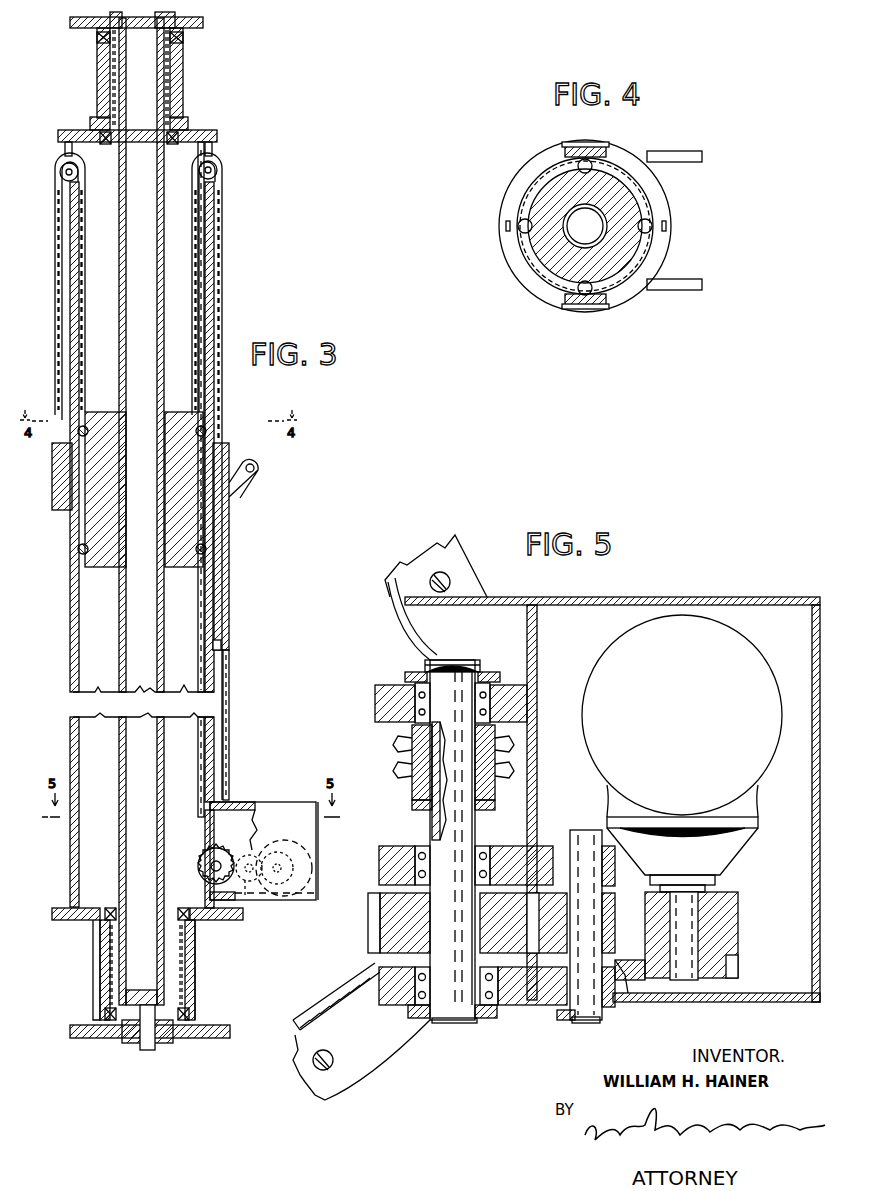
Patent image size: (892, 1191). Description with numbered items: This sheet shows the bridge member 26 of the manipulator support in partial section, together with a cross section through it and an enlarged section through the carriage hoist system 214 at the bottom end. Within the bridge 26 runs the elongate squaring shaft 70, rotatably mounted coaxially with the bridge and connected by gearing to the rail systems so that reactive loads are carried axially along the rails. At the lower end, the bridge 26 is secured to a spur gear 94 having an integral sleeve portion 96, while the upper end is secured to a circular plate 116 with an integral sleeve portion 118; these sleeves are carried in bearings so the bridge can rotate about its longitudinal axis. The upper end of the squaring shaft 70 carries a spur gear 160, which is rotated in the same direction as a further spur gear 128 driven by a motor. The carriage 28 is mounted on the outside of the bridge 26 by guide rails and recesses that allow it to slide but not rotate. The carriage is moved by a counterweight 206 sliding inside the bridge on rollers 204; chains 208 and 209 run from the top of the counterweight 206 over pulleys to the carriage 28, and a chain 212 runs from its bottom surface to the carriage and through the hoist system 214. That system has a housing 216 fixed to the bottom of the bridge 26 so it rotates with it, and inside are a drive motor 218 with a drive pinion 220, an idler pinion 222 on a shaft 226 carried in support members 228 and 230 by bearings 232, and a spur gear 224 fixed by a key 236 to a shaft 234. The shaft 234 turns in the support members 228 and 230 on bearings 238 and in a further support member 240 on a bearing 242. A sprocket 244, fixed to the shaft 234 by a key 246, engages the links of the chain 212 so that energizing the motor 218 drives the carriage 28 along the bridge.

In FIG. 4, the bridge member 26 is at (523, 186).
In FIG. 3, the carriage 28 is at (222, 635).
In FIG. 4, the carriage 28 is at (498, 204).
In FIG. 3, the elongate squaring shaft 70 is at (166, 662).
In FIG. 4, the elongate squaring shaft 70 is at (605, 222).
In FIG. 3, the spur gear 94 is at (68, 920).
In FIG. 3, the sleeve portion 96 is at (70, 968).
In FIG. 3, the circular plate 116 is at (190, 135).
In FIG. 3, the sleeve portion 118 is at (183, 76).
In FIG. 3, the spur gear 128 is at (217, 1038).
In FIG. 3, the spur gear 160 is at (203, 17).
In FIG. 3, the rollers 204 is at (85, 558).
In FIG. 4, the rollers 204 is at (555, 280).
In FIG. 3, the counterweight 206 is at (105, 567).
In FIG. 4, the counterweight 206 is at (548, 258).
In FIG. 3, the chain 208 is at (56, 418).
In FIG. 4, the chain 208 is at (505, 228).
In FIG. 3, the chain 209 is at (222, 404).
In FIG. 4, the chain 209 is at (668, 230).
In FIG. 3, the chain 212 is at (232, 574).
In FIG. 3, the carriage hoist system 214 is at (259, 790).
In FIG. 3, the housing 216 is at (265, 802).
In FIG. 5, the housing 216 is at (740, 597).
In FIG. 3, the drive motor 218 is at (305, 858).
In FIG. 5, the drive motor 218 is at (682, 715).
In FIG. 3, the drive pinion 220 is at (300, 880).
In FIG. 5, the drive pinion 220 is at (720, 918).
In FIG. 3, the idler pinion 222 is at (258, 895).
In FIG. 5, the idler pinion 222 is at (630, 978).
In FIG. 3, the spur gear 224 is at (212, 915).
In FIG. 5, the spur gear 224 is at (515, 1010).
In FIG. 5, the shaft 226 is at (588, 1002).
In FIG. 5, the support member 228 is at (517, 960).
In FIG. 5, the support member 230 is at (530, 845).
In FIG. 5, the bearings 232 is at (615, 868).
In FIG. 5, the shaft 234 is at (448, 1022).
In FIG. 5, the key 236 is at (400, 922).
In FIG. 5, the bearings 238 is at (430, 880).
In FIG. 5, the support member 240 is at (378, 690).
In FIG. 5, the bearing 242 is at (425, 670).
In FIG. 3, the sprocket 244 is at (228, 852).
In FIG. 5, the sprocket 244 is at (405, 748).
In FIG. 5, the key 246 is at (415, 795).